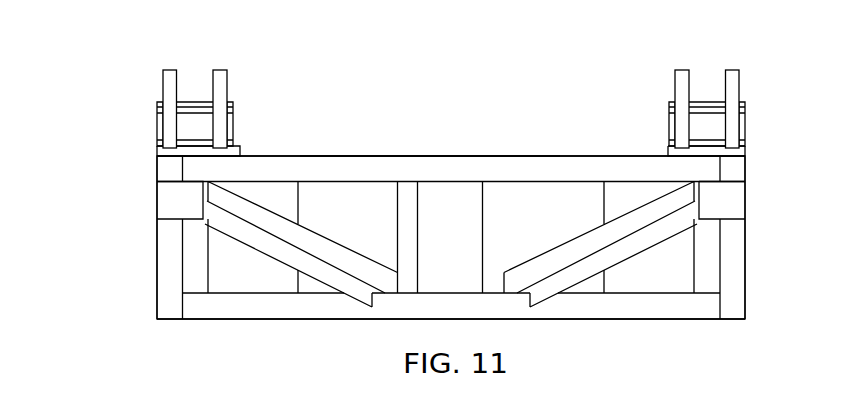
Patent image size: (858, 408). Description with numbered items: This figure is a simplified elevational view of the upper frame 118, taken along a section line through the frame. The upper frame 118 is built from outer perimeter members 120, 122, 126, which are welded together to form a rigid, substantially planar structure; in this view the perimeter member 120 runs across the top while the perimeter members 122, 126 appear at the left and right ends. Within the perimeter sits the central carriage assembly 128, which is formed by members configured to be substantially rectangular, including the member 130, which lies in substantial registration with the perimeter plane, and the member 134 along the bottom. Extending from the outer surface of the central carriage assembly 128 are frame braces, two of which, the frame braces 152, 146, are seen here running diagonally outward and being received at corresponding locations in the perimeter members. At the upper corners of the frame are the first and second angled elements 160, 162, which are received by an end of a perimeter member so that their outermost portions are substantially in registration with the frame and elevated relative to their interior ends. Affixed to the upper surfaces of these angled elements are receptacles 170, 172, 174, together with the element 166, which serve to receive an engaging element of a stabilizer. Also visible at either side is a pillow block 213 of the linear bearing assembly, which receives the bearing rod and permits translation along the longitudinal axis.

The upper frame 118 is at (315, 51).
The outer perimeter member 120 is at (513, 162).
The outer perimeter member 122 is at (157, 172).
The outer perimeter member 126 is at (747, 163).
The central carriage assembly 128 is at (430, 151).
The carriage assembly member 130 is at (451, 245).
The carriage assembly member 134 is at (327, 310).
The frame brace 146 is at (632, 243).
The frame brace 152 is at (272, 248).
The first angled element 160 is at (198, 109).
The second angled element 162 is at (709, 105).
The left clamp collar 166 is at (158, 123).
The receptacle 170 is at (162, 92).
The receptacle 172 is at (738, 82).
The receptacle 174 is at (747, 124).
The pillow block 213 is at (170, 212).